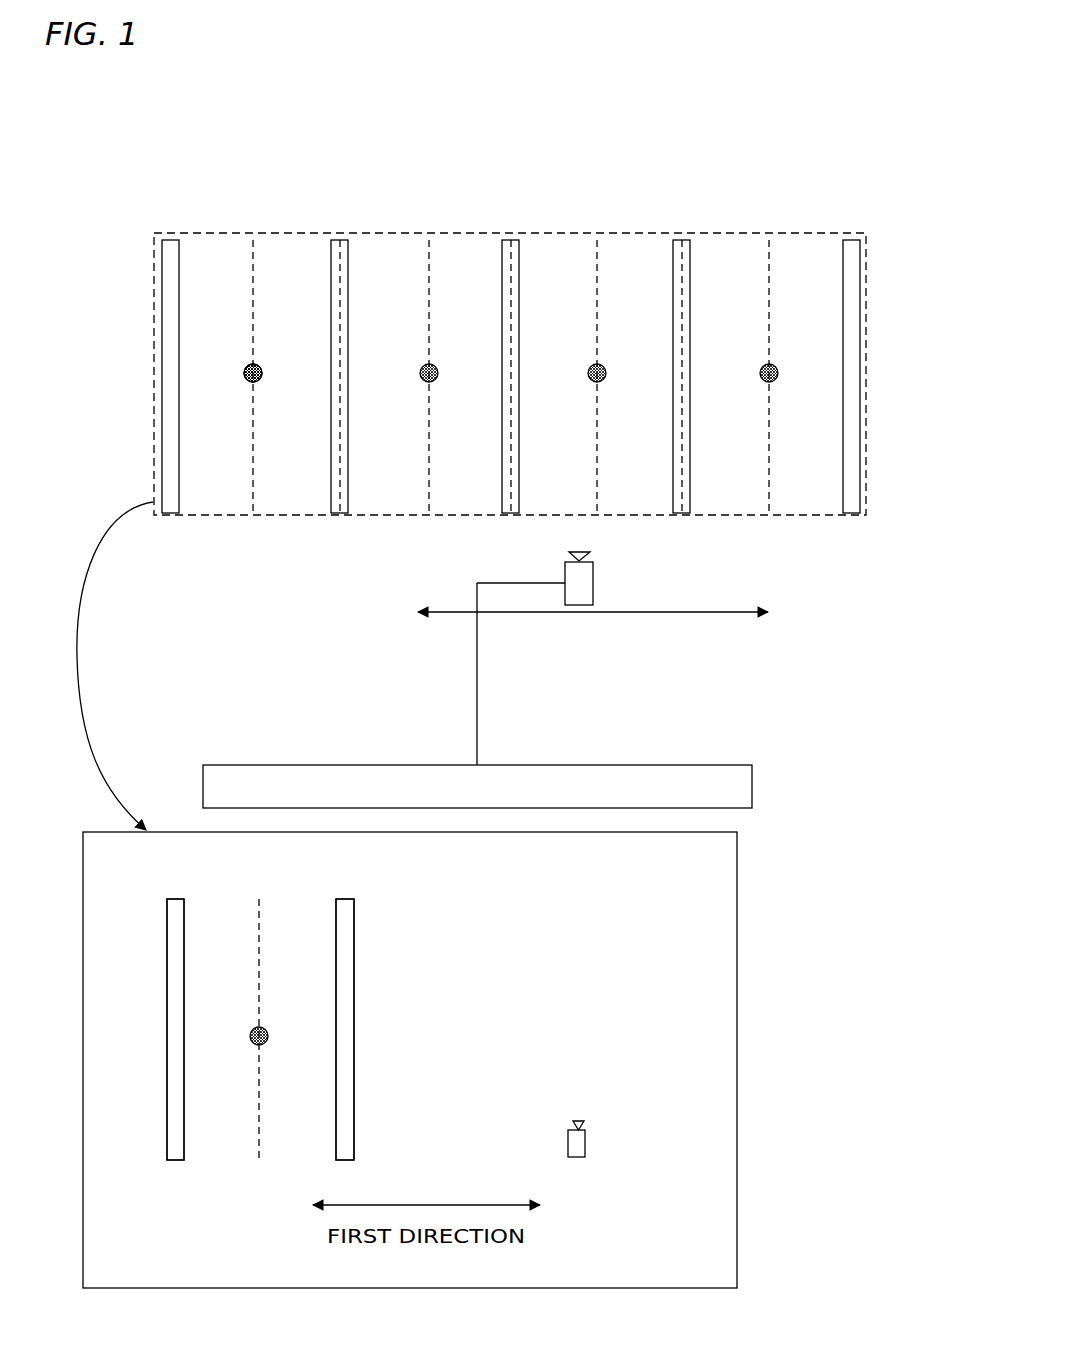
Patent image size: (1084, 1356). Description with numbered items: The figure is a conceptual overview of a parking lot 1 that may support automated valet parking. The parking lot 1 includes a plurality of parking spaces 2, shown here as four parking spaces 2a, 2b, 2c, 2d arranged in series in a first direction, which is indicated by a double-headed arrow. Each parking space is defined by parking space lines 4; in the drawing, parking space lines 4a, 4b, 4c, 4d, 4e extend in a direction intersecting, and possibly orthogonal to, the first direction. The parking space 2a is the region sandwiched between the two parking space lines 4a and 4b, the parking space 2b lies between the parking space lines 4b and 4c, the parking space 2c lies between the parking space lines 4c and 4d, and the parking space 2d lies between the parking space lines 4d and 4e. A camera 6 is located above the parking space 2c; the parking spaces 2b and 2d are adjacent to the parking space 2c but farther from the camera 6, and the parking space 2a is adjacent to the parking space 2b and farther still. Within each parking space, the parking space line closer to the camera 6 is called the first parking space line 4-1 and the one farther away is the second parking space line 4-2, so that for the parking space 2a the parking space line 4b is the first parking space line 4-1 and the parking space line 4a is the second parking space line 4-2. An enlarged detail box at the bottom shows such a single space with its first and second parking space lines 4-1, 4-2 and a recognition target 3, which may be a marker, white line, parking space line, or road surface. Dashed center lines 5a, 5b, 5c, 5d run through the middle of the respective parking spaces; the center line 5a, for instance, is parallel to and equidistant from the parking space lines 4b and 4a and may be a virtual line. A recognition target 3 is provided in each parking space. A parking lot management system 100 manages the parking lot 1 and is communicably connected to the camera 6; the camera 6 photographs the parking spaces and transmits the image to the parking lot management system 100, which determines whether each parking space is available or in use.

The parking lot 1 is at (895, 652).
The parking spaces 2 is at (865, 172).
The parking space 2a is at (213, 233).
The parking space 2b is at (410, 233).
The parking space 2c is at (575, 233).
The parking space 2d is at (743, 233).
The recognition target 3 is at (253, 382).
The parking space lines 4 is at (180, 899).
The parking space line 4a is at (162, 297).
The parking space line 4b is at (338, 240).
The parking space line 4c is at (508, 240).
The parking space line 4d is at (677, 238).
The parking space line 4e is at (860, 300).
The first parking space line 4-1 is at (355, 1070).
The second parking space line 4-2 is at (165, 1077).
The center line 5a is at (254, 455).
The center line 5b is at (430, 455).
The center line 5c is at (599, 455).
The center line 5d is at (772, 456).
The camera 6 is at (593, 593).
The parking lot management system 100 is at (255, 765).